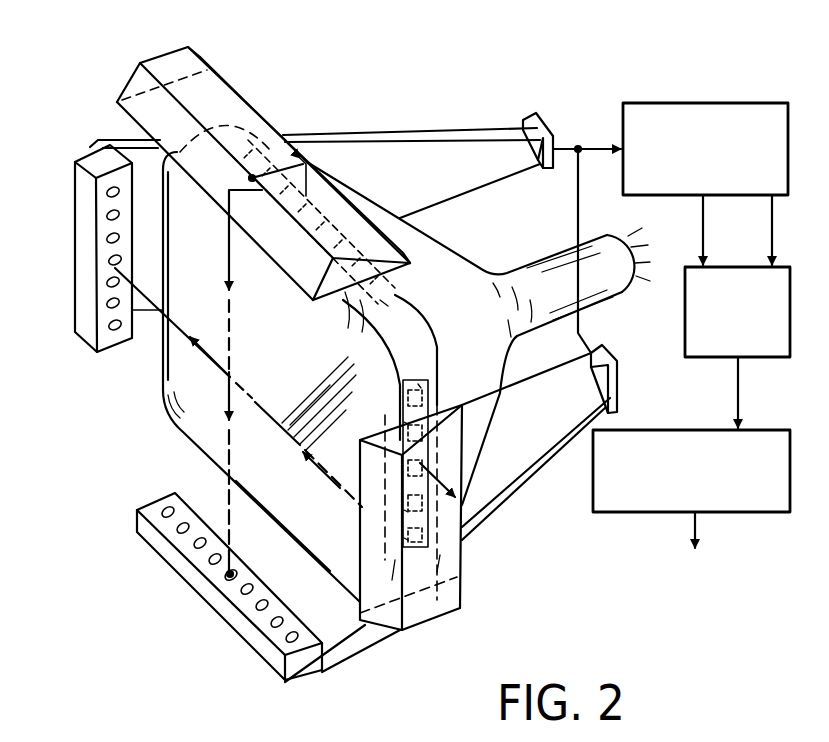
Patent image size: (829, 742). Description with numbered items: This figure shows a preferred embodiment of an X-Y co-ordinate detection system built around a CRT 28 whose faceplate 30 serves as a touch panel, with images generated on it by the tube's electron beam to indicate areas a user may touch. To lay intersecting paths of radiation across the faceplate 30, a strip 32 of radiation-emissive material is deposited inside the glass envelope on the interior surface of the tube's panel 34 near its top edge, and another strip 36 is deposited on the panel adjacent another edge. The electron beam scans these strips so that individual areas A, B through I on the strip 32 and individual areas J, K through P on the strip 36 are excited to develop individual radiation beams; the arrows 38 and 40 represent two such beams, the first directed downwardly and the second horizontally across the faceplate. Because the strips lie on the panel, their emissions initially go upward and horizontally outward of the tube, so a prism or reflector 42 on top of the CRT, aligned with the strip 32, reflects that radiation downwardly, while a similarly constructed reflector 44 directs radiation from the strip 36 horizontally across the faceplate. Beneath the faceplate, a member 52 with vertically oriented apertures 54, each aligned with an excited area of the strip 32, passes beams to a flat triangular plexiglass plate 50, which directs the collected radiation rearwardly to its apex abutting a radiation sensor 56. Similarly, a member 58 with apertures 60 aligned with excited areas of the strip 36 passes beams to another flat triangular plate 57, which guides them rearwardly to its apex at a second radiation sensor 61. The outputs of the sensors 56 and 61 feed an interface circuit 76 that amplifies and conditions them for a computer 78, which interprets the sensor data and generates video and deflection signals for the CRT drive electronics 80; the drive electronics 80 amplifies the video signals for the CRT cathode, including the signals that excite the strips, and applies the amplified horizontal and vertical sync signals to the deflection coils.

The CRT 28 is at (596, 300).
The faceplate 30 is at (322, 573).
The strip of radiation-emissive material 32 is at (366, 298).
The panel 34 is at (360, 320).
The strip of radiation-emissive material 36 is at (400, 378).
The arrow 38 is at (232, 345).
The arrow 40 is at (252, 395).
The reflector 42 is at (130, 85).
The reflector 44 is at (437, 615).
The plastic plate 50 is at (346, 656).
The member 52 is at (137, 517).
The apertures 54 is at (214, 560).
The radiation sensor 56 is at (625, 396).
The plastic plate 57 is at (123, 140).
The member 58 is at (106, 350).
The apertures 60 is at (110, 322).
The radiation sensor 61 is at (528, 122).
The interface circuit 76 is at (718, 103).
The computer 78 is at (685, 337).
The CRT drive electronics 80 is at (593, 489).
The individual area A is at (230, 160).
The individual area B is at (252, 178).
The individual area I is at (388, 297).
The individual area J is at (405, 538).
The individual area K is at (405, 510).
The individual area O is at (405, 422).
The individual area P is at (421, 386).